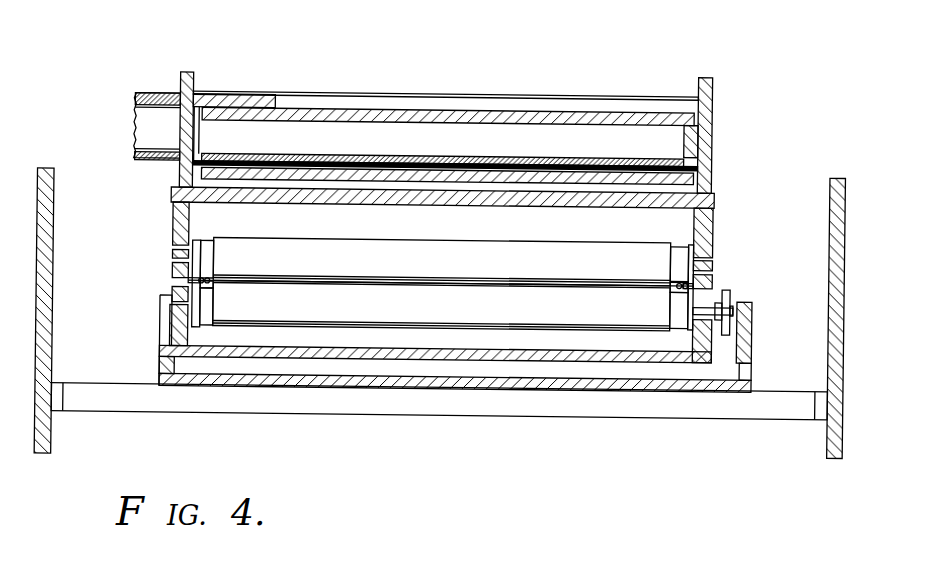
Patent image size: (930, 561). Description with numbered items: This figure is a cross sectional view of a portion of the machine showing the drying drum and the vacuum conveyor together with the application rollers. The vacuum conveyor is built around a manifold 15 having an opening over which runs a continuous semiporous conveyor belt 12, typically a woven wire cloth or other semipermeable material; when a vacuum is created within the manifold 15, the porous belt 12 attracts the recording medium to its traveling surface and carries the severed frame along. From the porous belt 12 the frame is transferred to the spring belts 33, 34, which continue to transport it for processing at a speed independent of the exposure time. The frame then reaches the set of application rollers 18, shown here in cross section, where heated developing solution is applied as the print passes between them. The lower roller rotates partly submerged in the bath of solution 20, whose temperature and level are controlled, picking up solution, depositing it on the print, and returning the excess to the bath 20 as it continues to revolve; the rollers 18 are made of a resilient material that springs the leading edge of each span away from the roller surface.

The conveyor belt 12 is at (638, 164).
The manifold 15 is at (406, 142).
The application rollers 18 is at (346, 259).
The bath of solution 20 is at (430, 341).
The spring belt 33 is at (205, 283).
The spring belt 34 is at (208, 291).